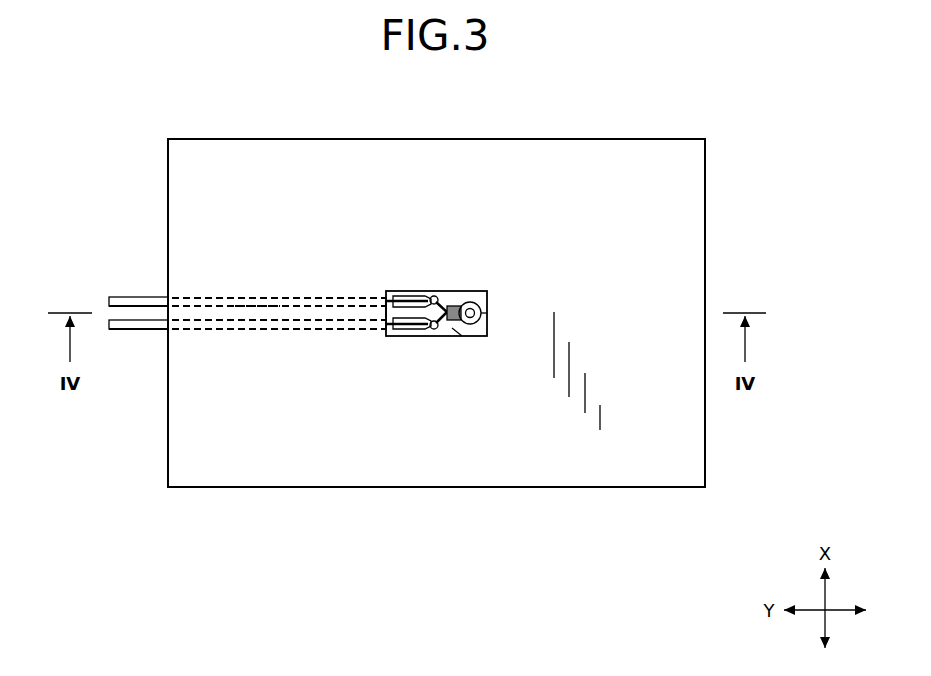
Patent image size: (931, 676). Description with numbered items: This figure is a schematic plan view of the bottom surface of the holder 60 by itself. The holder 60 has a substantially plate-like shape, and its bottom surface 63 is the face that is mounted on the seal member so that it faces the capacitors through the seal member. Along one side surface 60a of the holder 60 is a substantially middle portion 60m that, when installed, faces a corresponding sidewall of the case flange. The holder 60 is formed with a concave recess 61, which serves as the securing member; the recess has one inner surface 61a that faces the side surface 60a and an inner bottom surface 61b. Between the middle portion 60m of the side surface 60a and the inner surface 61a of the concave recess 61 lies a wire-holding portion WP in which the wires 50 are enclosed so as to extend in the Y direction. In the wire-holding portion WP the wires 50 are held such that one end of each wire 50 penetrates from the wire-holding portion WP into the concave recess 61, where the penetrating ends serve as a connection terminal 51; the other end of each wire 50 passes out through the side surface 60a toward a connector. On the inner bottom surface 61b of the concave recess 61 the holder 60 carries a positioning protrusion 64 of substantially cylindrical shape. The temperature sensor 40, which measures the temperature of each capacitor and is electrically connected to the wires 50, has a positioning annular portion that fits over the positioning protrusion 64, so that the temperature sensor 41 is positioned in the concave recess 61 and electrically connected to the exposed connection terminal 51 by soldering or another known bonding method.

The temperature sensor 40 is at (452, 300).
The temperature sensor 41 is at (473, 300).
The wires 50 is at (200, 297).
The connection terminal 51 is at (415, 294).
The holder 60 is at (697, 208).
The side surface 60a is at (168, 160).
The middle portion 60m is at (160, 336).
The concave recess 61 is at (443, 338).
The inner surface 61a is at (395, 336).
The inner bottom surface 61b is at (458, 337).
The bottom surface 63 is at (672, 467).
The positioning protrusion 64 is at (498, 300).
The wire-holding portion WP is at (258, 338).